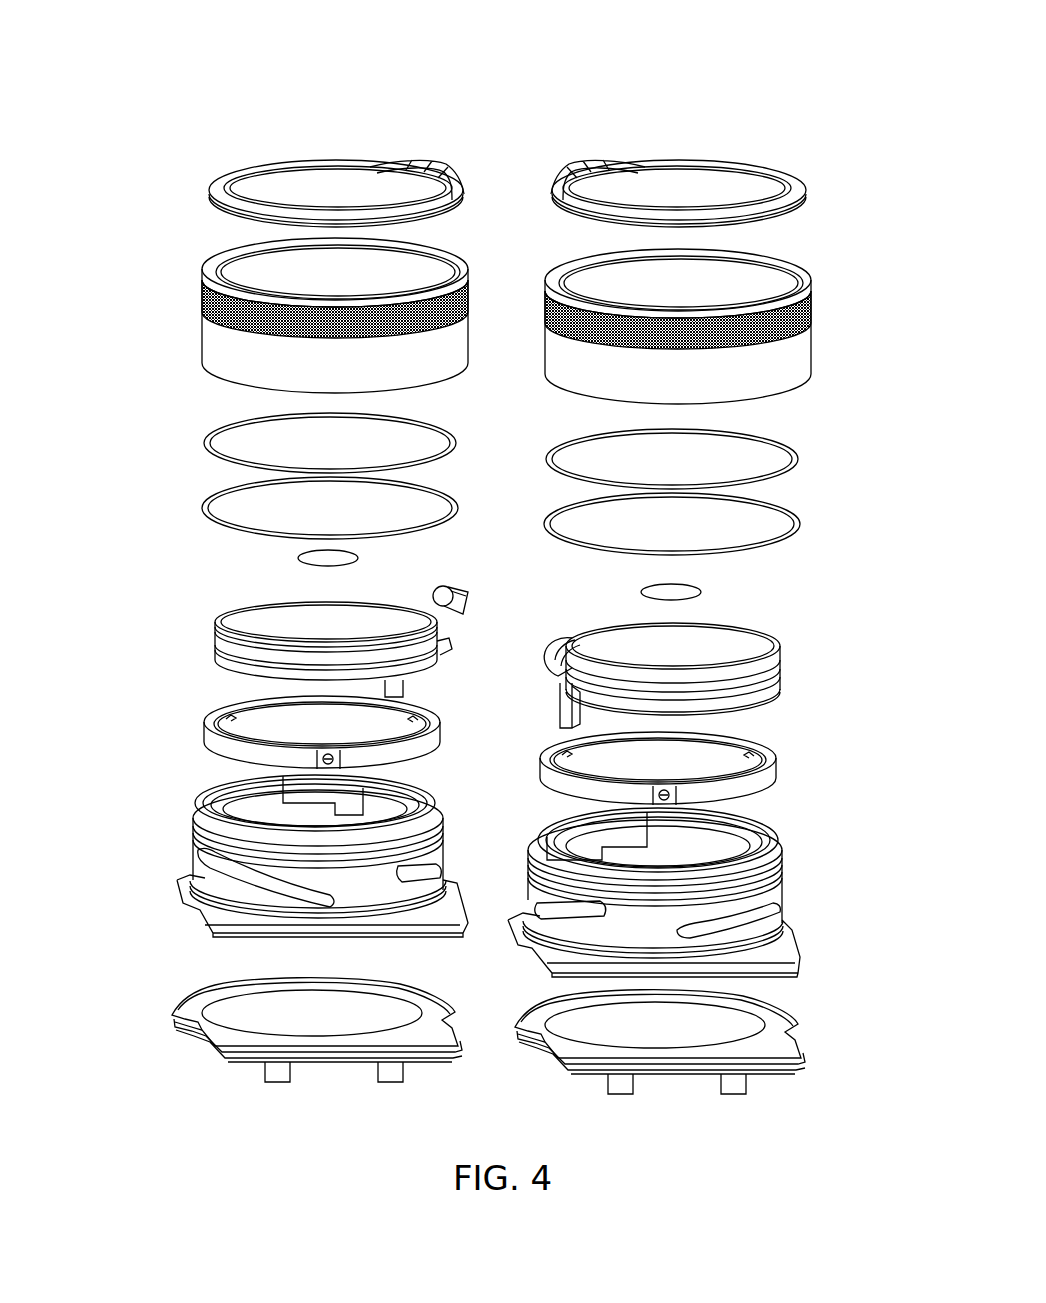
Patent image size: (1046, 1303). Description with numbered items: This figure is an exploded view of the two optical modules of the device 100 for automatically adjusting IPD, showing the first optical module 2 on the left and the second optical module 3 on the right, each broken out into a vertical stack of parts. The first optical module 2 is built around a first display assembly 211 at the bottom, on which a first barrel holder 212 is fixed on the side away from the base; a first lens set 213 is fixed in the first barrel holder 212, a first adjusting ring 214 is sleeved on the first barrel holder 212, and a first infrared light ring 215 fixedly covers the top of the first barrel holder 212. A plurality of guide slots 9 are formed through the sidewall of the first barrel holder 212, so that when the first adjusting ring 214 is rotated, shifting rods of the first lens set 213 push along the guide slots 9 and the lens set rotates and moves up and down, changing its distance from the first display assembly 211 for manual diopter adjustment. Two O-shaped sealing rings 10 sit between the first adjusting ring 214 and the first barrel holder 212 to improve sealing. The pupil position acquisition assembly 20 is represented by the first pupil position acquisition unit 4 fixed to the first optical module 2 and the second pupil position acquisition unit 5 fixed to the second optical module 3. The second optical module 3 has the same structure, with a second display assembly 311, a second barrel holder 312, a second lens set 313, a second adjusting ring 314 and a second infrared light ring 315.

The device for automatically adjusting IPD 100 is at (521, 44).
The first optical module 2 is at (155, 348).
The second optical module 3 is at (830, 535).
The first pupil position acquisition unit 4 is at (438, 597).
The second pupil position acquisition unit 5 is at (777, 628).
The guide slots 9 is at (197, 858).
The sealing rings 10 is at (220, 433).
The pupil position acquisition assembly 20 is at (143, 542).
The first display assembly 211 is at (217, 990).
The first barrel holder 212 is at (207, 813).
The first lens set 213 is at (213, 715).
The first adjusting ring 214 is at (222, 251).
The first infrared light ring 215 is at (222, 175).
The second display assembly 311 is at (782, 1030).
The second barrel holder 312 is at (772, 882).
The second lens set 313 is at (790, 763).
The second adjusting ring 314 is at (813, 330).
The second infrared light ring 315 is at (803, 193).